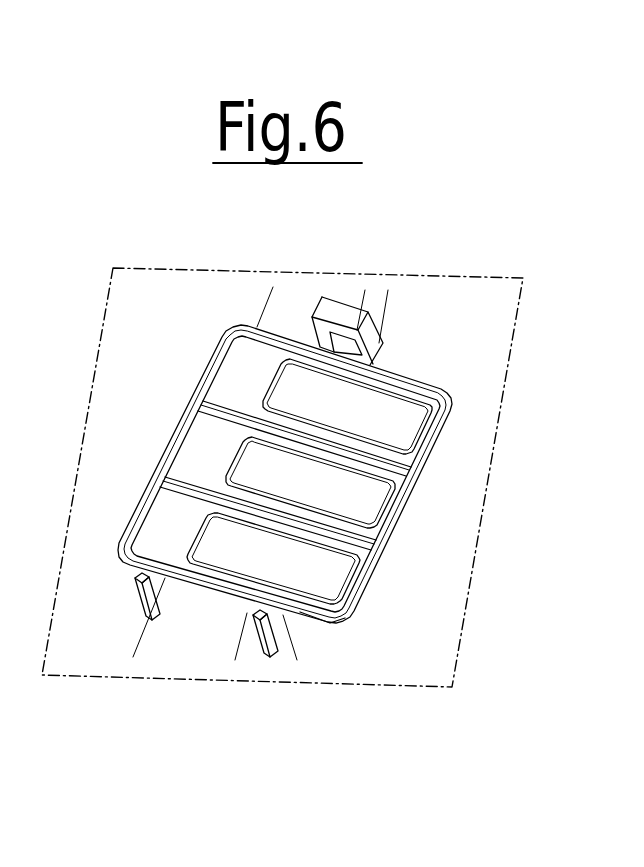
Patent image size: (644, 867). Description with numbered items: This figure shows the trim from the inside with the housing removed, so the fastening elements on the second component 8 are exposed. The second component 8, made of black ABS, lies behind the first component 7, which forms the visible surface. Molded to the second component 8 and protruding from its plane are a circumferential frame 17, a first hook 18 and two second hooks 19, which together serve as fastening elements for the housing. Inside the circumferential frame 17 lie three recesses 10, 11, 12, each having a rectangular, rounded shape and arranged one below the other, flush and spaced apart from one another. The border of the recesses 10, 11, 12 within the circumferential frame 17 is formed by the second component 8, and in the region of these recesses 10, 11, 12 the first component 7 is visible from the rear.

The first component 7 is at (318, 413).
The second component 8 is at (233, 368).
The recess 10 is at (413, 424).
The recess 11 is at (378, 505).
The recess 12 is at (330, 592).
The circumferential frame 17 is at (363, 585).
The first hook 18 is at (338, 313).
The second hooks 19 is at (140, 607).